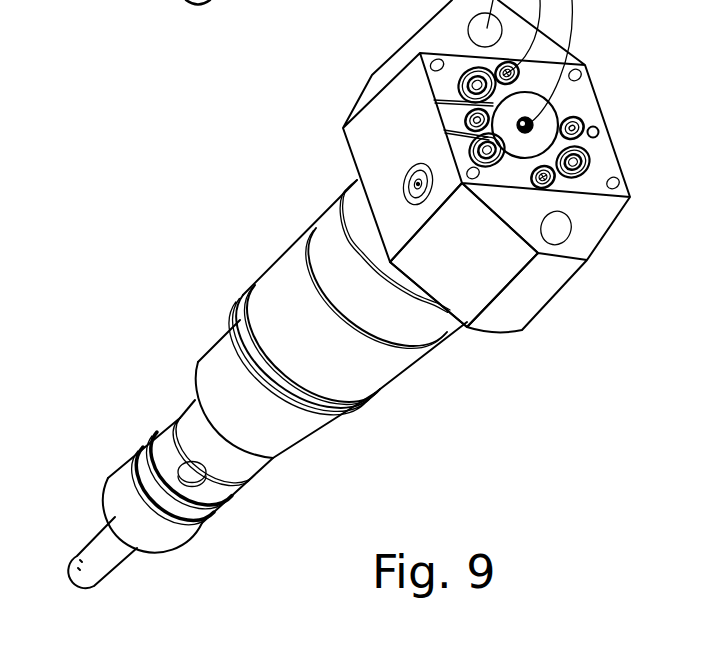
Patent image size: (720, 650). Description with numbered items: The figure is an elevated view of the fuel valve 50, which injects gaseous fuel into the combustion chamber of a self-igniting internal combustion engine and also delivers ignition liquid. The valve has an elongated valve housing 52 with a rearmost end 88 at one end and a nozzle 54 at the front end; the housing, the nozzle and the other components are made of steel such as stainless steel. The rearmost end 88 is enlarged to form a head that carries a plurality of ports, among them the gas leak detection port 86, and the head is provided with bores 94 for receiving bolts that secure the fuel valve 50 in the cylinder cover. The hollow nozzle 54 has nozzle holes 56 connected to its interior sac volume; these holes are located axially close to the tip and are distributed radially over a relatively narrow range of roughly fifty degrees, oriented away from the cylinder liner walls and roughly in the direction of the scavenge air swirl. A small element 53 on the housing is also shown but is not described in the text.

The fuel valve 50 is at (210, 148).
The elongated valve housing 52 is at (300, 263).
The button 53 is at (183, 470).
The nozzle 54 is at (110, 557).
The nozzle holes 56 is at (64, 552).
The gas leak detection port 86 is at (553, 182).
The rearmost end 88 is at (476, 277).
The bores 94 is at (560, 232).